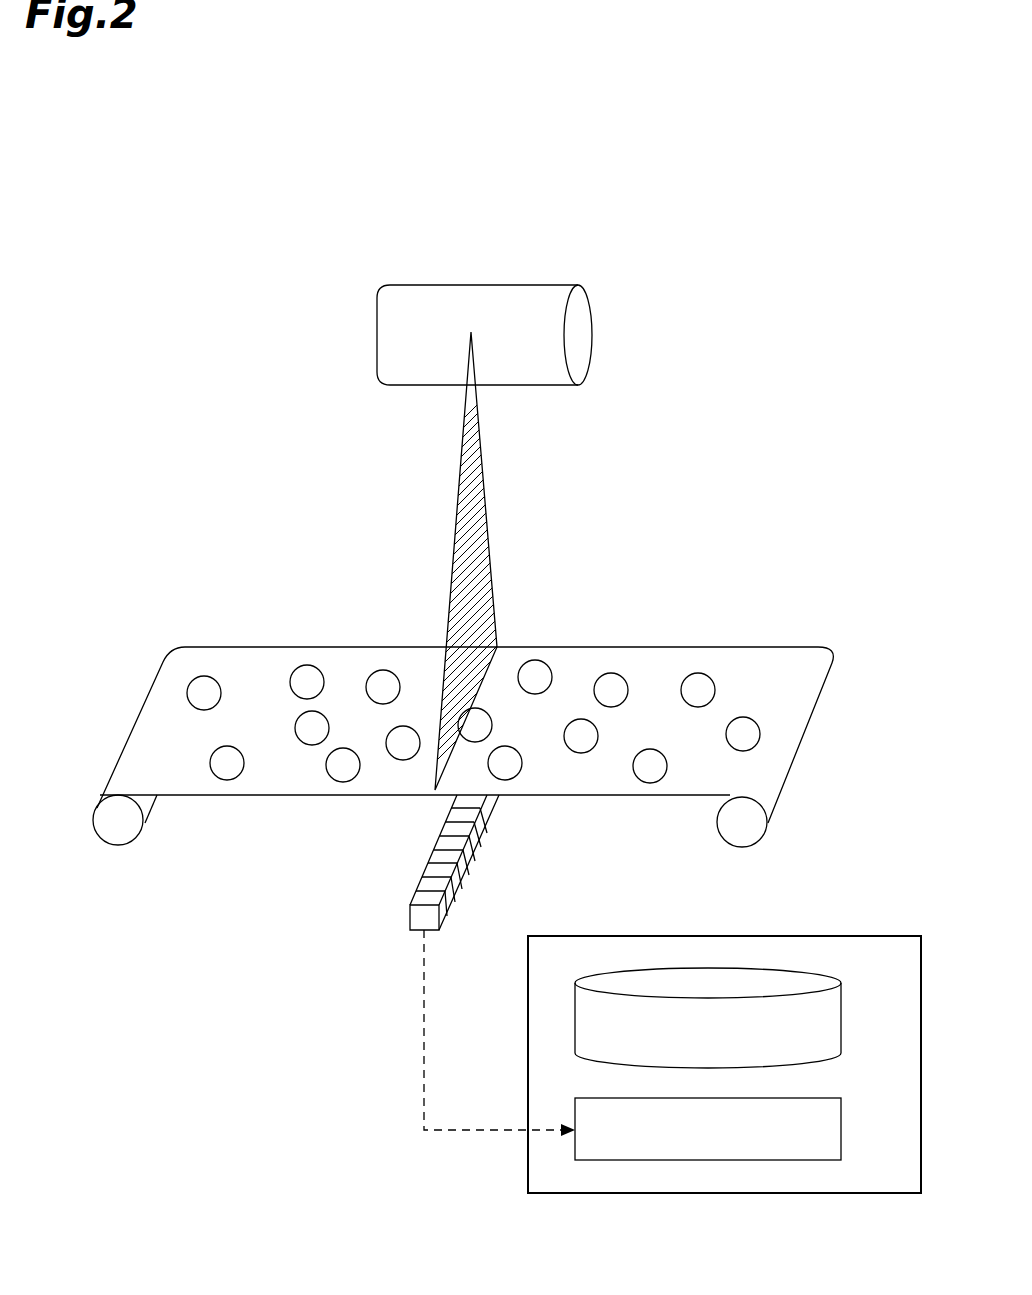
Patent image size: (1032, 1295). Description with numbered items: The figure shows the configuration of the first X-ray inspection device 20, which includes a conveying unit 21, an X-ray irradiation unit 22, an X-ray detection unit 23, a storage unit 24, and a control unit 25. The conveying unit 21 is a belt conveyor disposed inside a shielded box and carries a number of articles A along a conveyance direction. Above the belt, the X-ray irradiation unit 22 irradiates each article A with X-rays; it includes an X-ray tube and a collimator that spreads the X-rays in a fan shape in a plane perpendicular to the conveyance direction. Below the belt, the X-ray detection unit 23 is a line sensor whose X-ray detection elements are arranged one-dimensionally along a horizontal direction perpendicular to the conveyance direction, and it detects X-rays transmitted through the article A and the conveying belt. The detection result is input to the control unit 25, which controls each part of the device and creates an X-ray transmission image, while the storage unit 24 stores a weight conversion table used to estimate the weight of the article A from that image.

The first X-ray inspection device 20 is at (692, 160).
The conveying unit 21 is at (226, 668).
The X-ray irradiation unit 22 is at (533, 302).
The X-ray detection unit 23 is at (467, 867).
The storage unit 24 is at (842, 1019).
The control unit 25 is at (842, 1129).
The article A is at (608, 686).